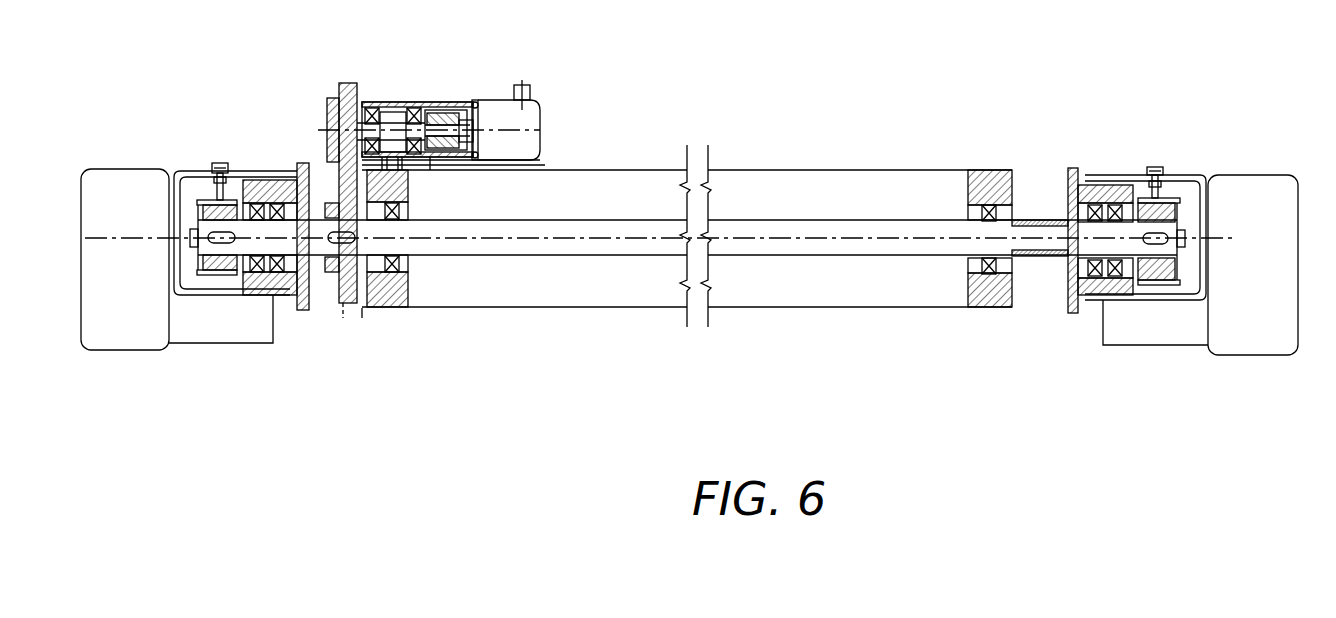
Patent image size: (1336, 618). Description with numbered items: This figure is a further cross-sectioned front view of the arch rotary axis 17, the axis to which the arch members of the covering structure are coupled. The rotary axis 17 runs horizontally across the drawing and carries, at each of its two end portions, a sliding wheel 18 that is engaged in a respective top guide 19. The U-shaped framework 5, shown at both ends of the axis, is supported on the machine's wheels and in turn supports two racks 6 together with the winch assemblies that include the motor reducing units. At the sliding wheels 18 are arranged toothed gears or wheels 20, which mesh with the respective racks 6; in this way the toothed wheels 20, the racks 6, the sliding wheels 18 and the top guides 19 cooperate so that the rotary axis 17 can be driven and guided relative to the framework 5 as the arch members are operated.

The framework 5 is at (112, 168).
The rack 6 is at (210, 182).
The rotary axis 17 is at (592, 293).
The sliding wheel 18 is at (273, 285).
The top guide 19 is at (255, 171).
The toothed wheel 20 is at (222, 272).